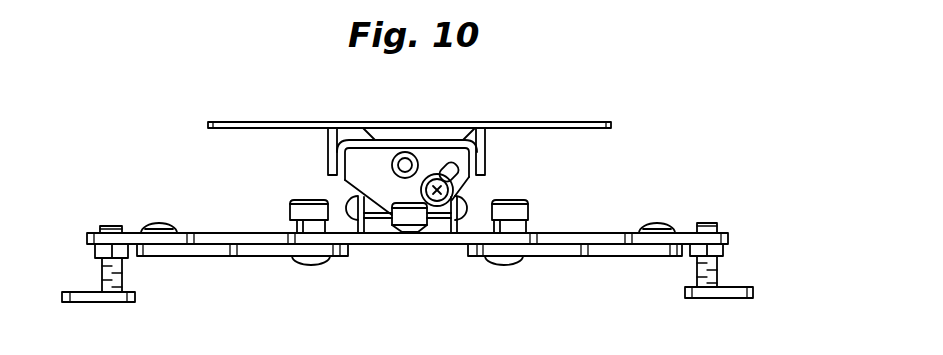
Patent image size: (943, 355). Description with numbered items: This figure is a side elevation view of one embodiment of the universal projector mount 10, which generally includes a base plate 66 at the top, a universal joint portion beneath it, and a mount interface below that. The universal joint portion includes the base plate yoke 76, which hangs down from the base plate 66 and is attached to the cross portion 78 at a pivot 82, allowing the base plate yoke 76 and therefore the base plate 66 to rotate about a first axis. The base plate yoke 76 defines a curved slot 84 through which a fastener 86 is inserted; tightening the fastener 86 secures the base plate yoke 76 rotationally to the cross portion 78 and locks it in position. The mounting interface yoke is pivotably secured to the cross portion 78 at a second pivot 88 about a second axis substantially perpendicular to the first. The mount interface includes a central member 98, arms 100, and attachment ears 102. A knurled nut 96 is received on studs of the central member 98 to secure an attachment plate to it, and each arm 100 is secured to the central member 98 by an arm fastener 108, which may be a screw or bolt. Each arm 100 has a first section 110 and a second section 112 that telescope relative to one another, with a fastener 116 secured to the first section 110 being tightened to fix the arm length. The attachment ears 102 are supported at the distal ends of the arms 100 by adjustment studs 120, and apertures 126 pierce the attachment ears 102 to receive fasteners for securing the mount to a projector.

The universal projector mount 10 is at (624, 107).
The base plate 66 is at (243, 121).
The base plate yoke 76 is at (328, 167).
The cross portion 78 is at (350, 187).
The pivot 82 is at (398, 152).
The curved slot 84 is at (449, 178).
The fastener 86 is at (444, 166).
The pivot 88 is at (450, 205).
The knurled nut 96 is at (292, 208).
The central member 98 is at (372, 244).
The arms 100 is at (225, 243).
The attachment ears 102 is at (118, 302).
The arm fastener 108 is at (312, 263).
The first section 110 is at (157, 248).
The second section 112 is at (207, 236).
The fastener 116 is at (157, 223).
The adjustment stud 120 is at (100, 272).
The apertures 126 is at (77, 303).